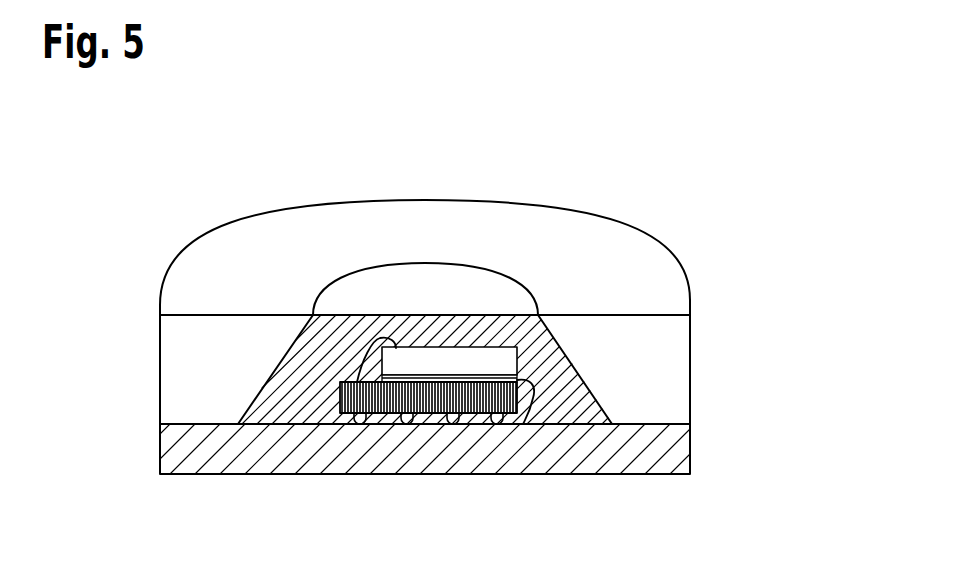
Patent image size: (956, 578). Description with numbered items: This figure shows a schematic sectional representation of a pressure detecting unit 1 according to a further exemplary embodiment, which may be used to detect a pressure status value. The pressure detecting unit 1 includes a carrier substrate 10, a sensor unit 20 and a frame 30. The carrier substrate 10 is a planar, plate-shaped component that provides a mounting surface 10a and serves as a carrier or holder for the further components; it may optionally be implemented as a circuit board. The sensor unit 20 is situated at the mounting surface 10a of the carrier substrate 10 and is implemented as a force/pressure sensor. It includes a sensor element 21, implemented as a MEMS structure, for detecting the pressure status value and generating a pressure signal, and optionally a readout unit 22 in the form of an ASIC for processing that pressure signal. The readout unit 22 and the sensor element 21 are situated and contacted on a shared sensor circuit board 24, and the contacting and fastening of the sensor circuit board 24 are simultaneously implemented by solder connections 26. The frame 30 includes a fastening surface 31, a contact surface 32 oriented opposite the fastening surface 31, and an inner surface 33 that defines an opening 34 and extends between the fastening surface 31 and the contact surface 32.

The pressure detecting unit 1 is at (715, 112).
The carrier substrate 10 is at (675, 453).
The mounting surface 10a is at (288, 407).
The sensor unit 20 is at (548, 334).
The sensor element 21 is at (528, 355).
The readout unit 22 is at (520, 385).
The sensor circuit board 24 is at (370, 400).
The solder connections 26 is at (490, 424).
The frame 30 is at (672, 402).
The fastening surface 31 is at (663, 430).
The contact surface 32 is at (248, 292).
The inner surface 33 is at (584, 386).
The opening 34 is at (428, 264).